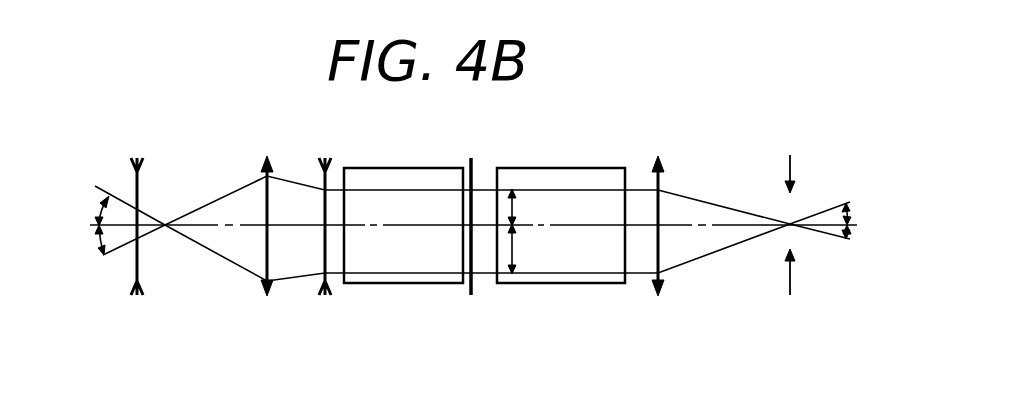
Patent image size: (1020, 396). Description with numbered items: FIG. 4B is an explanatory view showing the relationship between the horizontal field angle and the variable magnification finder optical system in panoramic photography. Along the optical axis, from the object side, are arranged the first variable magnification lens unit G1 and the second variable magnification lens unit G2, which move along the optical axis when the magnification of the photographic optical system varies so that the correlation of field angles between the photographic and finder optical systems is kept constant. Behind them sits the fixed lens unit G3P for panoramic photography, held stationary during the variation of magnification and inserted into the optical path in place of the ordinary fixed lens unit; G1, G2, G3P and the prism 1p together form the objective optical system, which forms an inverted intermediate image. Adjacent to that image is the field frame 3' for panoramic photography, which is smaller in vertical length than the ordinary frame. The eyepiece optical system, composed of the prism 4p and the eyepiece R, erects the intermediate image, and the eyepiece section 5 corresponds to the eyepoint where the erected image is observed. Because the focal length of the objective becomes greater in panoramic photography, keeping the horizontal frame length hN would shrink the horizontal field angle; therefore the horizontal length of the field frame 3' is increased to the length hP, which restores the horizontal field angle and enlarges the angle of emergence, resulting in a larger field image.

The first variable magnification lens unit G1 is at (140, 178).
The second variable magnification lens unit G2 is at (263, 165).
The fixed lens unit for panoramic photography G3P is at (328, 168).
The prism 1p is at (405, 168).
The field frame for panoramic photography 3' is at (489, 204).
The prism 4p is at (565, 168).
The eyepiece R is at (655, 178).
The eyepiece section 5 is at (785, 170).
The horizontal length of field frame hN is at (528, 207).
The horizontal length of field frame for panoramic photography hP is at (527, 249).